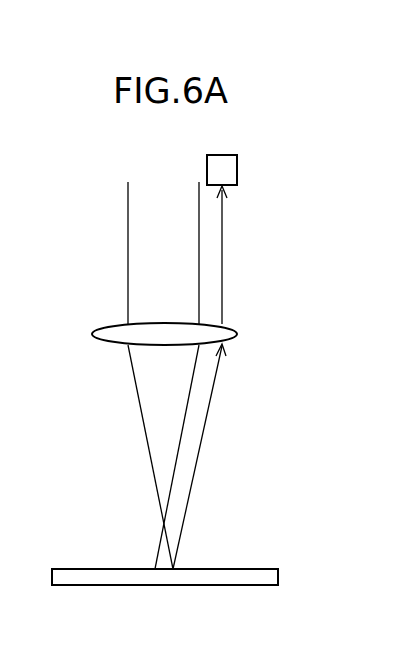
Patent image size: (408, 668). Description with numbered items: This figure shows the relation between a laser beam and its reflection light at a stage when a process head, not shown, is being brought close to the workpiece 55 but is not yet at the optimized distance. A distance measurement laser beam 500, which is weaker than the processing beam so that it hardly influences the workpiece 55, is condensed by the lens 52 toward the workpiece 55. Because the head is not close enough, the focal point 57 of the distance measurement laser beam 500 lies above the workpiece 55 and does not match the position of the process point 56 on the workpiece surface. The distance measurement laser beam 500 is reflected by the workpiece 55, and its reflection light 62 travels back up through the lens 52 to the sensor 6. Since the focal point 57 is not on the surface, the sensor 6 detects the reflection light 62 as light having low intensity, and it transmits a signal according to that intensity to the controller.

The distance measurement laser beam 500 is at (142, 246).
The sensor 6 is at (238, 165).
The reflection light 62 is at (223, 262).
The lens 52 is at (93, 334).
The focal point 57 is at (161, 516).
The process point 56 is at (178, 567).
The workpiece 55 is at (280, 578).